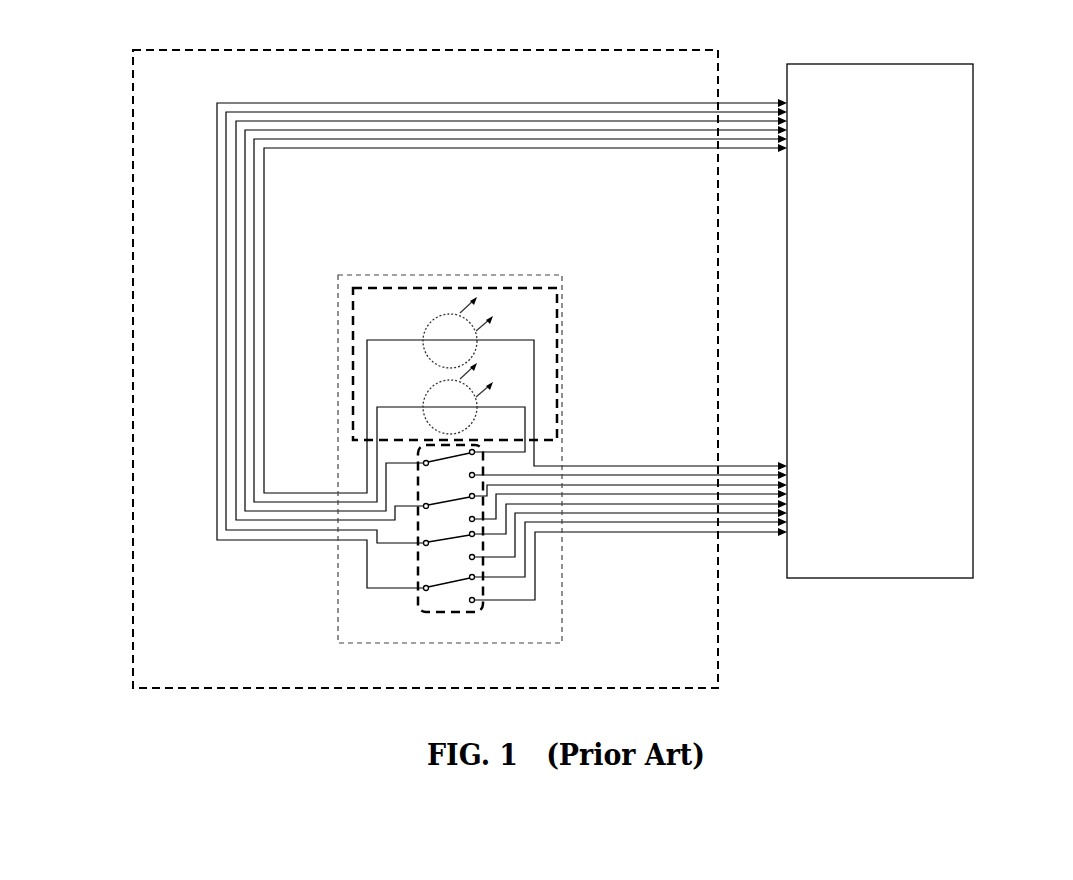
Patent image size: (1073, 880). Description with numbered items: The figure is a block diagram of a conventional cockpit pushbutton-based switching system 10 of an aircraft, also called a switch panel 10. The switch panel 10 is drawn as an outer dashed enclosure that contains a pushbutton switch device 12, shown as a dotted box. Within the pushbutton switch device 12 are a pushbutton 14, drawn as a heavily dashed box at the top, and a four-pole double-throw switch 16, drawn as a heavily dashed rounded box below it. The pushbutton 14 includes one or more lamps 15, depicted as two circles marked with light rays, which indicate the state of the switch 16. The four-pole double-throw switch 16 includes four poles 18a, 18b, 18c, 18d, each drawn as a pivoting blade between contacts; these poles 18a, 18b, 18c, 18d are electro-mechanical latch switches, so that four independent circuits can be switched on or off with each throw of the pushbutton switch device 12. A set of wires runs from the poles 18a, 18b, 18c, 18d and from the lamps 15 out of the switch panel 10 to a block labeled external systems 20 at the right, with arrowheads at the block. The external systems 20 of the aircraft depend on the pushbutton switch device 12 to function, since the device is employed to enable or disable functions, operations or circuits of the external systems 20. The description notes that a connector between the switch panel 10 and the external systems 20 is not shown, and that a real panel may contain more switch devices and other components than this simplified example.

The pushbutton-based switching system 10 is at (133, 93).
The pushbutton switch device 12 is at (534, 275).
The pushbutton 14 is at (510, 288).
The lamps 15 is at (443, 314).
The four-pole double-throw switch 16 is at (468, 615).
The pole 18a is at (443, 590).
The pole 18b is at (443, 545).
The pole 18c is at (442, 507).
The pole 18d is at (443, 458).
The external systems 20 is at (974, 88).